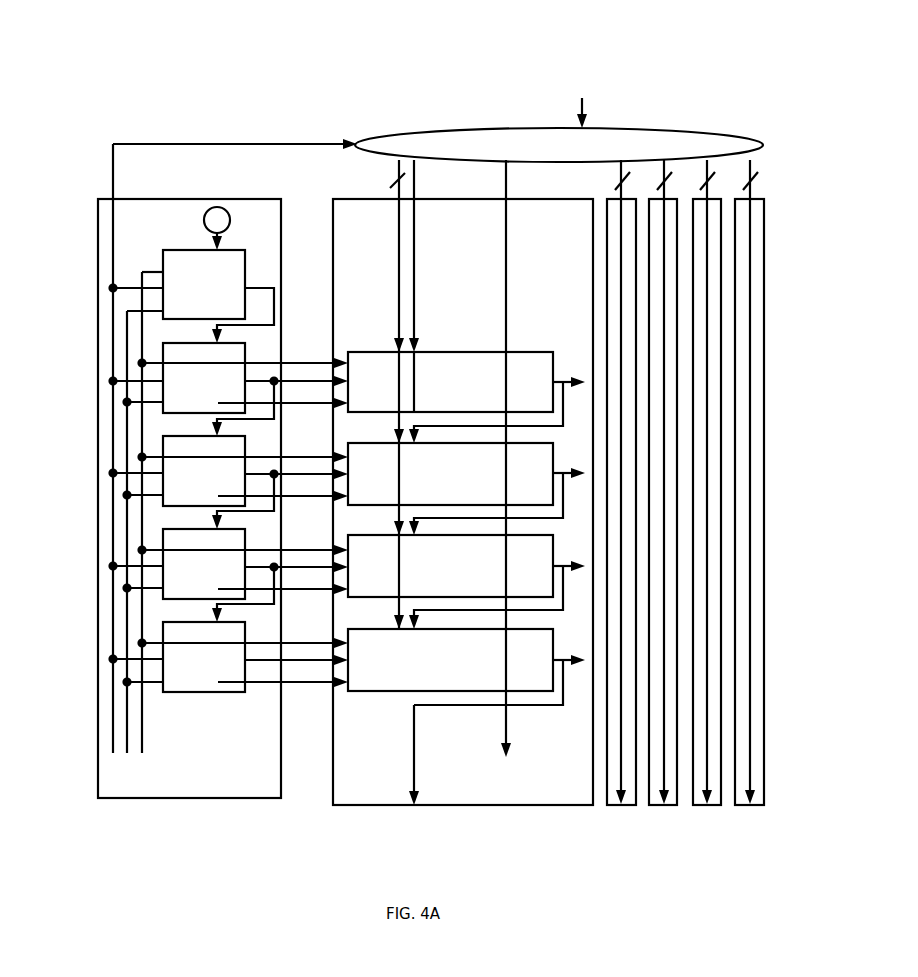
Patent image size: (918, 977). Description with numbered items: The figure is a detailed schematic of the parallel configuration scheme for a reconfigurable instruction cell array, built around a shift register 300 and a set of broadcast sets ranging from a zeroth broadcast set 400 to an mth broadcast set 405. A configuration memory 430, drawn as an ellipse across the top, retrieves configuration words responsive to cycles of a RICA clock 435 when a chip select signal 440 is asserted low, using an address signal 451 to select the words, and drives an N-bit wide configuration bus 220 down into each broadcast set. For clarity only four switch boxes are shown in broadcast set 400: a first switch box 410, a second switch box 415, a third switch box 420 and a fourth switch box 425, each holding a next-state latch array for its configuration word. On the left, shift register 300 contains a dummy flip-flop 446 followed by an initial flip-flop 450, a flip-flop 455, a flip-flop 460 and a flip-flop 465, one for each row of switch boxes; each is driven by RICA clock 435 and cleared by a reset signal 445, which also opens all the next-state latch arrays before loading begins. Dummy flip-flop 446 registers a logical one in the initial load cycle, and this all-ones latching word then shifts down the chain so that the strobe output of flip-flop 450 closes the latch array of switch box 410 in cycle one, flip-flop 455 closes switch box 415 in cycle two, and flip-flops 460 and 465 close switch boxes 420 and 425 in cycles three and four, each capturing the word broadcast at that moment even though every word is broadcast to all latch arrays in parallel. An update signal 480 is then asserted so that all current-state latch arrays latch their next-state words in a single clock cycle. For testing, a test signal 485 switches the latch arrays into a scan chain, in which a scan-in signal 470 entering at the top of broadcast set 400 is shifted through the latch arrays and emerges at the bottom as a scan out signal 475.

The configuration bus 220 is at (413, 227).
The shift register 300 is at (190, 800).
The zeroth broadcast set 400 is at (357, 808).
The mth broadcast set 405 is at (764, 722).
The first switch box 410 is at (466, 397).
The second switch box 415 is at (466, 489).
The third switch box 420 is at (466, 582).
The fourth switch box 425 is at (466, 667).
The configuration memory 430 is at (410, 128).
The RICA clock 435 is at (113, 698).
The chip select signal 440 is at (528, 70).
The reset signal 445 is at (142, 728).
The dummy flip-flop 446 is at (247, 265).
The initial flip-flop 450 is at (247, 351).
The address signal 451 is at (621, 70).
The flip-flop 455 is at (247, 444).
The flip-flop 460 is at (247, 537).
The flip-flop 465 is at (247, 630).
The scan-in signal 470 is at (414, 327).
The scan out signal 475 is at (414, 765).
The update signal 480 is at (506, 272).
The test signal 485 is at (127, 727).